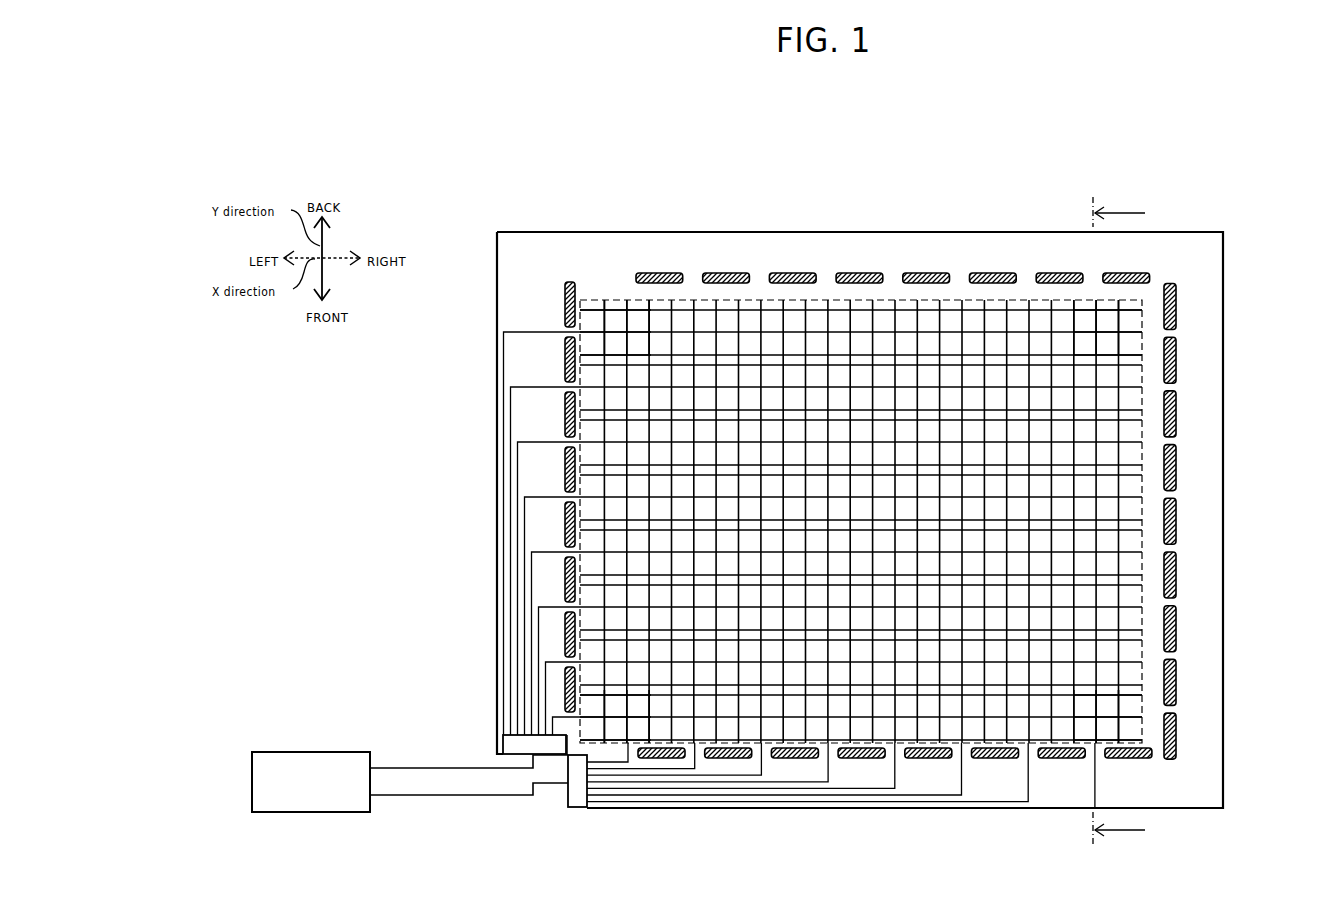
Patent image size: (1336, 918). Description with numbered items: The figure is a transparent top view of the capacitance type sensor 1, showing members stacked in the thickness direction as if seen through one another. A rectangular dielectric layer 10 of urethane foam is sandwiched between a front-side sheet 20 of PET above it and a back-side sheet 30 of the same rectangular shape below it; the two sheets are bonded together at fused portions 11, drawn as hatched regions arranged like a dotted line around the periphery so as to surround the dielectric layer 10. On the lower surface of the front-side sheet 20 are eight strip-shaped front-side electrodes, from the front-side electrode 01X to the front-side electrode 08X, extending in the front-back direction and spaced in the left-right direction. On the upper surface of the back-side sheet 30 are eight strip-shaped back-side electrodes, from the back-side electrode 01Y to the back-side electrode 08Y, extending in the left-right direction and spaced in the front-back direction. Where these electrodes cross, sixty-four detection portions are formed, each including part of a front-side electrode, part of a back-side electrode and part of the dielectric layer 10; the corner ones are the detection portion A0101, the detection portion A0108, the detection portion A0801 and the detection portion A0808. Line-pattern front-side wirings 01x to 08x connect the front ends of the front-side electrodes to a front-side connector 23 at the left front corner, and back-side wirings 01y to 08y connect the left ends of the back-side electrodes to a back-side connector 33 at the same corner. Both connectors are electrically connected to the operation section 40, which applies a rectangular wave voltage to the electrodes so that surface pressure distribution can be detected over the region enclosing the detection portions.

The capacitance type sensor 1 is at (474, 223).
The dielectric layer 10 is at (590, 298).
The fused portions 11 is at (858, 270).
The front-side sheet 20 is at (1200, 244).
The front-side connector 23 is at (570, 797).
The back-side sheet 30 is at (1200, 810).
The back-side connector 33 is at (497, 752).
The operation section 40 is at (328, 752).
The front-side electrode 01X is at (1078, 253).
The front-side electrode 08X is at (1115, 265).
The front-side wiring 01x is at (1040, 858).
The front-side wiring 08x is at (869, 807).
The back-side electrode 01Y is at (1141, 698).
The back-side electrode 08Y is at (1275, 720).
The back-side wiring 01y is at (560, 720).
The back-side wiring 08y is at (430, 665).
The detection portion A0108 is at (622, 325).
The detection portion A0808 is at (1110, 323).
The detection portion A0801 is at (1141, 703).
The detection portion A0101 is at (617, 718).